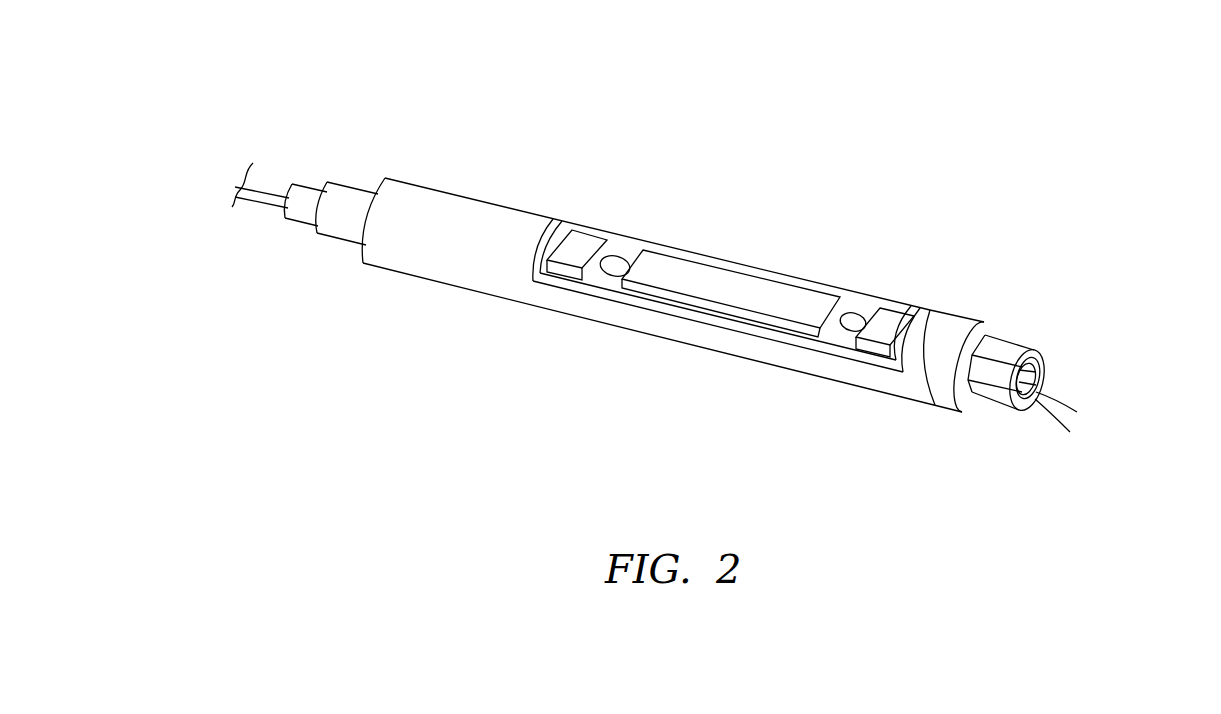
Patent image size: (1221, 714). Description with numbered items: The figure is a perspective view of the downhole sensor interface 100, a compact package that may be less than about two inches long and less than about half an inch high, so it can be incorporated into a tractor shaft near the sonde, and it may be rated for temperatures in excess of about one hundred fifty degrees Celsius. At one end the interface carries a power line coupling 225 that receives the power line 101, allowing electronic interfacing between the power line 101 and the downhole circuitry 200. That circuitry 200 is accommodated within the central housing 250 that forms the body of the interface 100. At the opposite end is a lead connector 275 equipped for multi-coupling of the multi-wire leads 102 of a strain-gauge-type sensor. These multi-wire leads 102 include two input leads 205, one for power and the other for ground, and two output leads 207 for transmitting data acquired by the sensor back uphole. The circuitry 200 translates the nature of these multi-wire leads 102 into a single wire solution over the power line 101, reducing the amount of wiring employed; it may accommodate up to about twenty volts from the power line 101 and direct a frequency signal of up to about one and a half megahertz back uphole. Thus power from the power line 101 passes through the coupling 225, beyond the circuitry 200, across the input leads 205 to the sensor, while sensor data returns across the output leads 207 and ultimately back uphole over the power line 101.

The downhole sensor interface 100 is at (734, 130).
The power line 101 is at (268, 190).
The multi-wire leads 102 is at (1065, 314).
The downhole circuitry 200 is at (780, 293).
The input leads 205 is at (1043, 422).
The output leads 207 is at (1037, 360).
The power line coupling 225 is at (337, 226).
The central housing 250 is at (433, 246).
The lead connector 275 is at (997, 347).